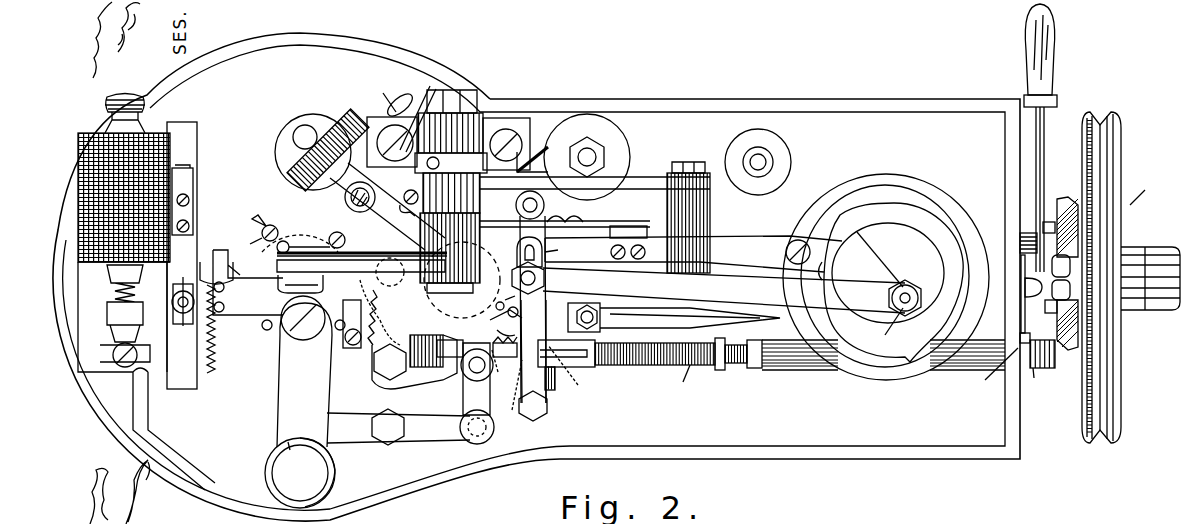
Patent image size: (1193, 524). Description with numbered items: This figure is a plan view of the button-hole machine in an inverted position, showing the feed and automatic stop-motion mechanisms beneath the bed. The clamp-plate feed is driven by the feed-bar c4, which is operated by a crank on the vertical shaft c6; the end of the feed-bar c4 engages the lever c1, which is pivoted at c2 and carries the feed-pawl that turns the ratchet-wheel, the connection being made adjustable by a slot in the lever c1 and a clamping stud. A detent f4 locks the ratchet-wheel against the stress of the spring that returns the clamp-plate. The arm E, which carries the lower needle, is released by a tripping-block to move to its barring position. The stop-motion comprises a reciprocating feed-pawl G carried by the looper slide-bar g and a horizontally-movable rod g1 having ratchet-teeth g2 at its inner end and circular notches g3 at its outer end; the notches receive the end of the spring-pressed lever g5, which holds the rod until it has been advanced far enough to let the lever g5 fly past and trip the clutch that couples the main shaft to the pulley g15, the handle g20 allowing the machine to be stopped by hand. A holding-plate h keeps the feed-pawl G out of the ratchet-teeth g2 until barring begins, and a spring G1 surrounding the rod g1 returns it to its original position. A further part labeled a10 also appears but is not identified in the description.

The arm E is at (300, 402).
The connecting rod a10 is at (410, 427).
The detent f4 is at (400, 197).
The feed-pawl G is at (430, 293).
The lever c1 is at (484, 281).
The feed-bar c4 is at (732, 292).
The pivot c2 is at (538, 367).
The vertical shaft c6 is at (885, 329).
The looper slide-bar g is at (666, 317).
The horizontally-movable rod g1 is at (507, 383).
The ratchet-teeth g2 is at (484, 379).
The circular notches g3 is at (1041, 368).
The lever g5 is at (1005, 365).
The pulley g15 is at (1114, 277).
The handle g20 is at (1052, 138).
The holding-plate h is at (566, 371).
The spring G1 is at (678, 369).